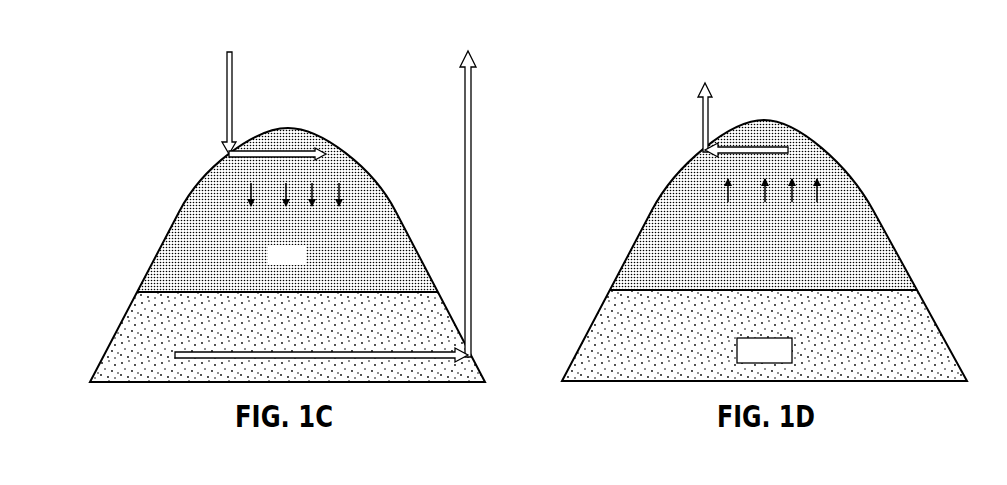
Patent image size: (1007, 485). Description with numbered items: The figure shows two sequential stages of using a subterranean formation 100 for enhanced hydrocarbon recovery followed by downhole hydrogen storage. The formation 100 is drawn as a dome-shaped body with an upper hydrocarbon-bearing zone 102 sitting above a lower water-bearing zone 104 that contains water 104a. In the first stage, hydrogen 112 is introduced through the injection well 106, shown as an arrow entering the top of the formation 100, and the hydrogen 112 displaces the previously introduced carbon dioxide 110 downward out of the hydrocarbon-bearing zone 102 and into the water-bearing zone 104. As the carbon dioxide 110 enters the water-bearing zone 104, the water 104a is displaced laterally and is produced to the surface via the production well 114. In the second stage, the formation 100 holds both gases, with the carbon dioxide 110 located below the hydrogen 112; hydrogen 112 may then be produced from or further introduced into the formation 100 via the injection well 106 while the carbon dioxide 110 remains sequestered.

In FIG. 1C, the subterranean formation 100 is at (502, 58).
In FIG. 1D, the subterranean formation 100 is at (890, 110).
In FIG. 1C, the hydrocarbon-bearing zone 102 is at (167, 237).
In FIG. 1D, the hydrocarbon-bearing zone 102 is at (643, 230).
In FIG. 1C, the water-bearing zone 104 is at (115, 330).
In FIG. 1D, the water-bearing zone 104 is at (600, 303).
In FIG. 1C, the water 104a is at (321, 339).
In FIG. 1C, the injection well 106 is at (228, 118).
In FIG. 1D, the injection well 106 is at (703, 130).
In FIG. 1C, the carbon dioxide 110 is at (287, 256).
In FIG. 1D, the carbon dioxide 110 is at (764, 350).
In FIG. 1C, the hydrogen 112 is at (247, 195).
In FIG. 1D, the hydrogen 112 is at (761, 204).
In FIG. 1C, the production well 114 is at (465, 155).